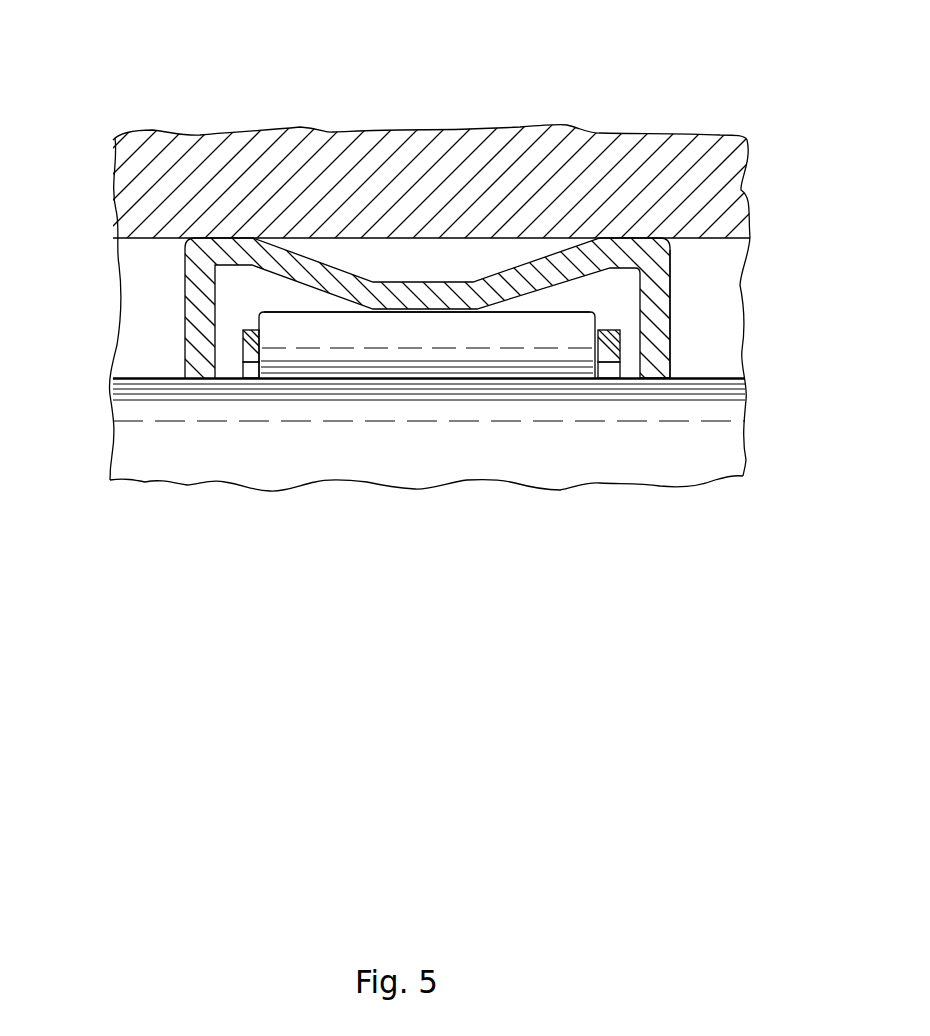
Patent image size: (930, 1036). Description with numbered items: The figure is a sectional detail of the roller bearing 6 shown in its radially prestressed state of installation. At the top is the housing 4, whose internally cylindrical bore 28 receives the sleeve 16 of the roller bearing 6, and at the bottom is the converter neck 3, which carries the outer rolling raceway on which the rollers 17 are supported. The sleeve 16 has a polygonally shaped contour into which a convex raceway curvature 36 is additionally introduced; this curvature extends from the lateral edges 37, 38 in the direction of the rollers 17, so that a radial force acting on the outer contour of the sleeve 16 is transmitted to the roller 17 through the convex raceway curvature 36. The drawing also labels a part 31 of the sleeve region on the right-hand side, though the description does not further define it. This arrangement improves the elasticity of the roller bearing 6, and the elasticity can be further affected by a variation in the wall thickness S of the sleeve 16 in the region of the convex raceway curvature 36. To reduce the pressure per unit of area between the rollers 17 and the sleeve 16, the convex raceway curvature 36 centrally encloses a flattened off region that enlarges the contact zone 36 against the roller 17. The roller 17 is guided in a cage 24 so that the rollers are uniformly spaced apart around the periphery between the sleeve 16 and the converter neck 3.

The converter neck 3 is at (158, 433).
The housing 4 is at (600, 170).
The roller bearing 6 is at (148, 332).
The sleeve 16 is at (358, 278).
The roller 17 is at (492, 330).
The cage 24 is at (613, 365).
The bore 28 is at (428, 239).
The right support wall 31 is at (573, 282).
The convex raceway curvature 36 is at (400, 313).
The lateral edge 37 is at (657, 342).
The lateral edge 38 is at (197, 277).
The wall thickness S is at (263, 305).